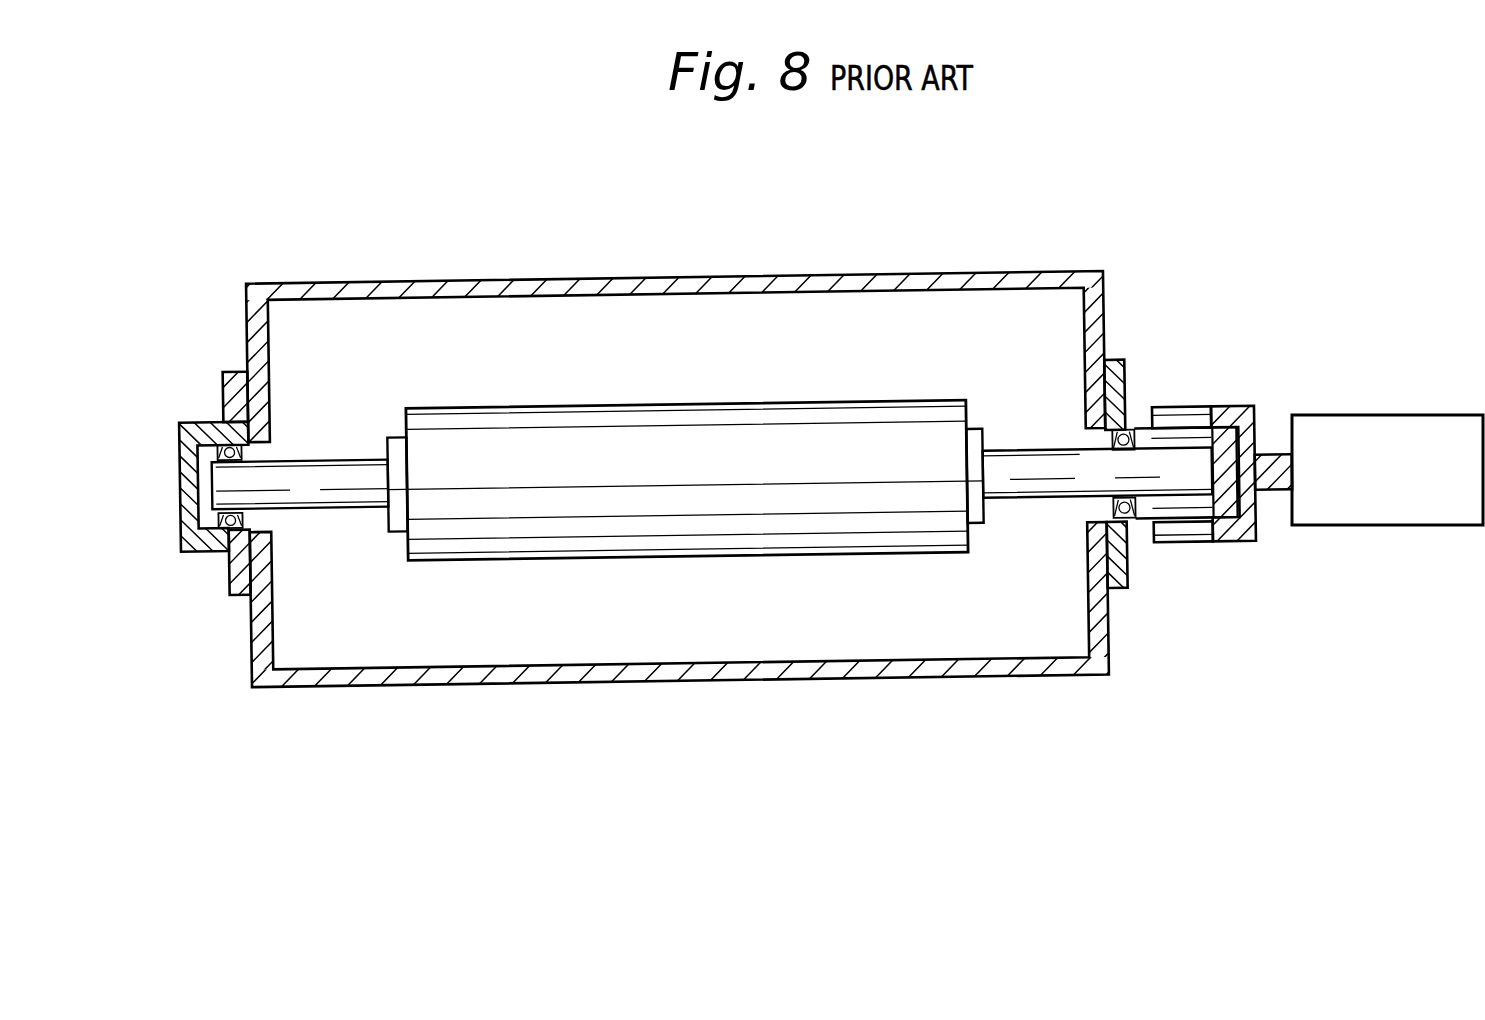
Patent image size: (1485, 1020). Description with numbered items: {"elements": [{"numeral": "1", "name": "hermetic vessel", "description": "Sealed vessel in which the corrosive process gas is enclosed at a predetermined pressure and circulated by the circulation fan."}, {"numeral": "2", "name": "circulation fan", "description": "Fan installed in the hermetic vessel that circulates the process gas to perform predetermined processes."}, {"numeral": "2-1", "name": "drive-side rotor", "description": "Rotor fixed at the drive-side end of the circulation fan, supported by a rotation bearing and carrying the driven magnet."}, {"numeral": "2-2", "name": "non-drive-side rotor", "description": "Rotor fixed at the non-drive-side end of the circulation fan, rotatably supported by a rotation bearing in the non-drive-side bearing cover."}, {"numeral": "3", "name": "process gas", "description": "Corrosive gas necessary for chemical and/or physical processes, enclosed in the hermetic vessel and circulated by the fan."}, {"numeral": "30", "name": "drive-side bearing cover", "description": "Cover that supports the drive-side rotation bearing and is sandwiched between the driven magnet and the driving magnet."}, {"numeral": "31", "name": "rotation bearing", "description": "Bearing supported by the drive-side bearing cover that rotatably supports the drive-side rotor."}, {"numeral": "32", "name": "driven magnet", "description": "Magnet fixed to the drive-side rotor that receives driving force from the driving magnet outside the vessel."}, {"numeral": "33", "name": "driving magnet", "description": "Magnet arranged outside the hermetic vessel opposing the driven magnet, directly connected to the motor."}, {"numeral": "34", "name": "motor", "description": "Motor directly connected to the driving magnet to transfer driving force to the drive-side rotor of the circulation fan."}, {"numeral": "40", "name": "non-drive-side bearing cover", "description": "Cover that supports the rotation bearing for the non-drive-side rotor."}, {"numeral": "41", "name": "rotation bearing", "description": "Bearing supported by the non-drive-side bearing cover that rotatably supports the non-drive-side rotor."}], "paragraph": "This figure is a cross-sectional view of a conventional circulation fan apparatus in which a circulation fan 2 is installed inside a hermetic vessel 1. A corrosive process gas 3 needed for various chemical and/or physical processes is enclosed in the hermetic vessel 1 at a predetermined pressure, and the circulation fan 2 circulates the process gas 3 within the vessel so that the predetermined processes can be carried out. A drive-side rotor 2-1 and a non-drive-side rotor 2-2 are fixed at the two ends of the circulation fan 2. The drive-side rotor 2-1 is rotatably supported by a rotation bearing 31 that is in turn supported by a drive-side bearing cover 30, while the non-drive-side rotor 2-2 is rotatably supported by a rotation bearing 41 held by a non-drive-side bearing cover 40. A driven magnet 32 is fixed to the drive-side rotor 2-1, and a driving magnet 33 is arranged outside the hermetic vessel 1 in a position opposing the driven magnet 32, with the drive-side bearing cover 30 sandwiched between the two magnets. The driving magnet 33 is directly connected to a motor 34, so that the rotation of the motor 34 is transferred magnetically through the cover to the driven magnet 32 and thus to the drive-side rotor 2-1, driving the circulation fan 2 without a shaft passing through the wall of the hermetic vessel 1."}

The housing upper casing 1 is at (682, 284).
The roller 2 is at (693, 418).
The roller shaft drive end 2-1 is at (1015, 460).
The roller shaft free end 2-2 is at (323, 462).
The housing lower casing 3 is at (818, 627).
The drive-side flange 30 is at (1125, 370).
The drive-side bearing 31 is at (1128, 522).
The coupling 32 is at (1187, 518).
The bearing holder 33 is at (1192, 415).
The motor 34 is at (1360, 515).
The free-side flange 40 is at (224, 372).
The bearing cap 41 is at (228, 562).